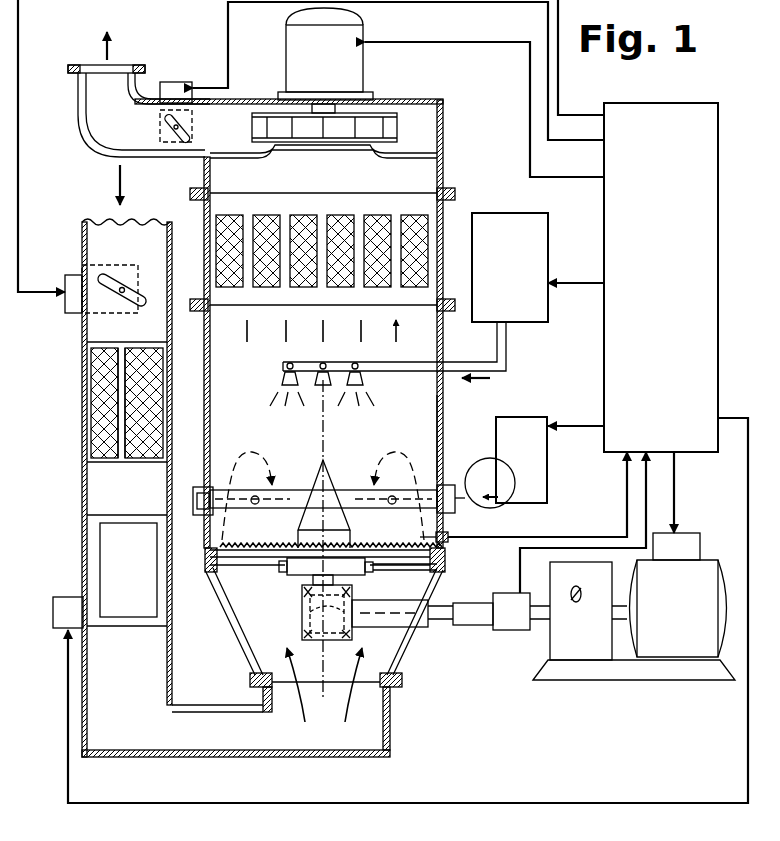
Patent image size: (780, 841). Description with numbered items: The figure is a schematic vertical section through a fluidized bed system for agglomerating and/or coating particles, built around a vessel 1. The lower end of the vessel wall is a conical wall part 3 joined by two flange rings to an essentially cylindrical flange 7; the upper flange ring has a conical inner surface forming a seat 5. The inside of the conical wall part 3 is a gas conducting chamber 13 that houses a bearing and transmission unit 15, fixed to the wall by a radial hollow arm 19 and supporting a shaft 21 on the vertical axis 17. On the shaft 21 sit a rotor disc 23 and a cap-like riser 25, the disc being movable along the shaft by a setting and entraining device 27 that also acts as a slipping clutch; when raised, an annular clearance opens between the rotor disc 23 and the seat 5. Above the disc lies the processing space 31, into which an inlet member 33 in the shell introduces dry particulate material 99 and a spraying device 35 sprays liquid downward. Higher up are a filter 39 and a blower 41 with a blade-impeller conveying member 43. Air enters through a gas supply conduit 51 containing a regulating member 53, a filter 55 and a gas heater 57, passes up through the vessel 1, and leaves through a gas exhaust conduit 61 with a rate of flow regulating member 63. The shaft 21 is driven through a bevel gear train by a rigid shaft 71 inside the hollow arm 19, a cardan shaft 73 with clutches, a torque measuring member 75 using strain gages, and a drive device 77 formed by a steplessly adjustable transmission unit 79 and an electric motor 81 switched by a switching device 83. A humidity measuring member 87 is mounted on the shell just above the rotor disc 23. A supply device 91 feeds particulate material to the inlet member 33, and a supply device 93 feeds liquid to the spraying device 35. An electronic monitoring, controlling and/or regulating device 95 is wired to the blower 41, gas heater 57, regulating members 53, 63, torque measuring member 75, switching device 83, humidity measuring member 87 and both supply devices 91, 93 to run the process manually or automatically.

The vessel 1 is at (205, 530).
The conical wall part 3 is at (243, 628).
The seat 5 is at (210, 570).
The cylindrical flange 7 is at (205, 392).
The gas conducting chamber 13 is at (395, 680).
The bearing and transmission unit 15 is at (302, 600).
The axis 17 is at (318, 695).
The radial hollow arm 19 is at (412, 628).
The shaft 21 is at (285, 572).
The rotor disc 23 is at (445, 560).
The riser 25 is at (340, 510).
The setting and entraining device 27 is at (443, 576).
The processing space 31 is at (443, 402).
The inlet member 33 is at (456, 480).
The spraying device 35 is at (284, 366).
The filter 39 is at (222, 230).
The blower 41 is at (366, 66).
The conveying member 43 is at (445, 108).
The gas supply conduit 51 is at (82, 490).
The regulating member 53 is at (65, 306).
The filter 55 is at (100, 405).
The gas heater 57 is at (97, 575).
The gas exhaust conduit 61 is at (92, 145).
The rate of flow regulating member 63 is at (172, 115).
The rigid shaft 71 is at (445, 624).
The cardan shaft 73 is at (476, 626).
The torque measuring member 75 is at (512, 631).
The drive device 77 is at (614, 682).
The transmission unit 79 is at (575, 660).
The electric motor 81 is at (695, 650).
The switching device 83 is at (695, 533).
The humidity measuring member 87 is at (446, 537).
The supply device 91 is at (545, 417).
The supply device 93 is at (520, 322).
The electronic monitoring, controlling and/or regulating device 95 is at (604, 343).
The particulate material 99 is at (250, 545).